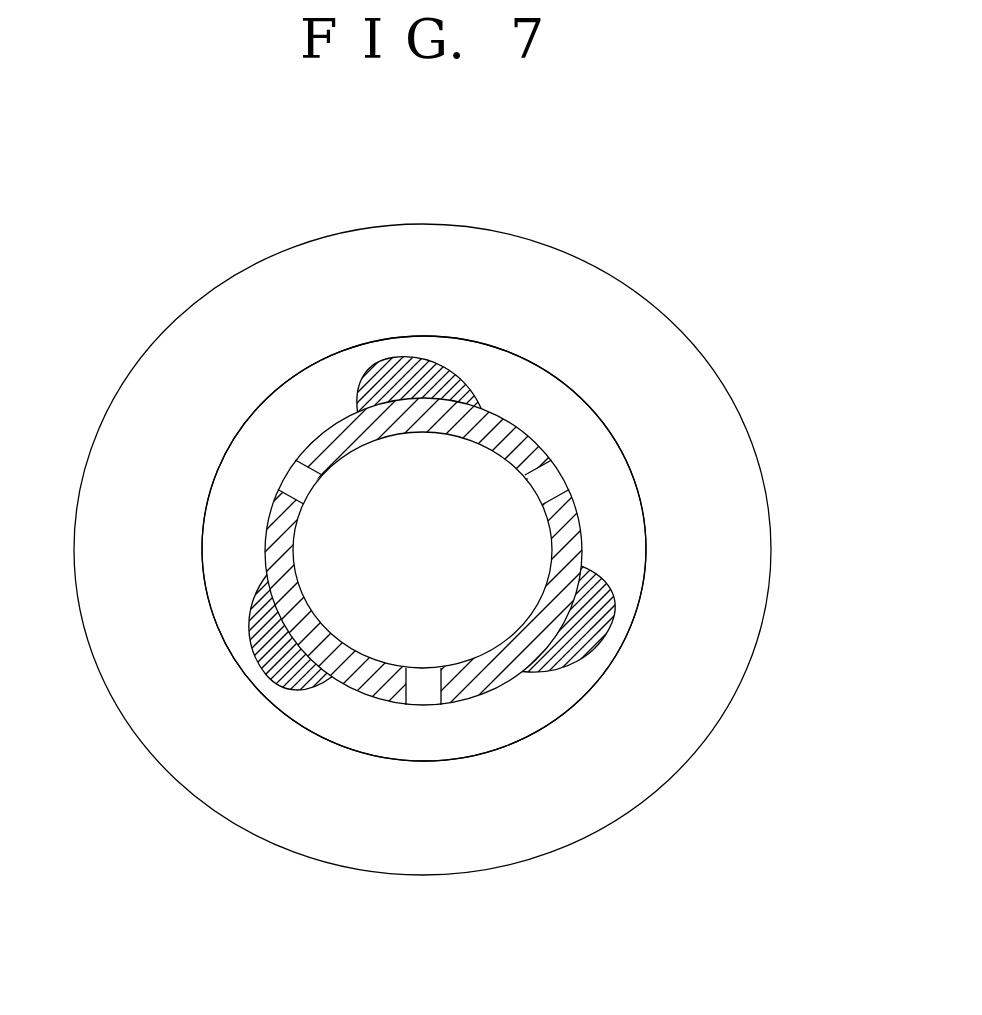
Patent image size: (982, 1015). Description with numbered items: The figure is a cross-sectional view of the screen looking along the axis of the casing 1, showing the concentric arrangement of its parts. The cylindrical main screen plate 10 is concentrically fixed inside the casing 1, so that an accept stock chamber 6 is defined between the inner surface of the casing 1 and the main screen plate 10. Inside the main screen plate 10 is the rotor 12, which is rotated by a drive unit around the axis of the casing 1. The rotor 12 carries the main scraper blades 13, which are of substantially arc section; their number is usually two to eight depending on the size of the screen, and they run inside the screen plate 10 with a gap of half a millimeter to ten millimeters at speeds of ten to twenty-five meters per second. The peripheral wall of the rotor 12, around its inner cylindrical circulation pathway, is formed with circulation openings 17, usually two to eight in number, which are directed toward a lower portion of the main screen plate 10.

The casing 1 is at (160, 337).
The accept stock chamber 6 is at (620, 733).
The main screen plate 10 is at (560, 382).
The rotor 12 is at (474, 525).
The main scraper blades 13 is at (253, 655).
The circulation openings 17 is at (558, 478).